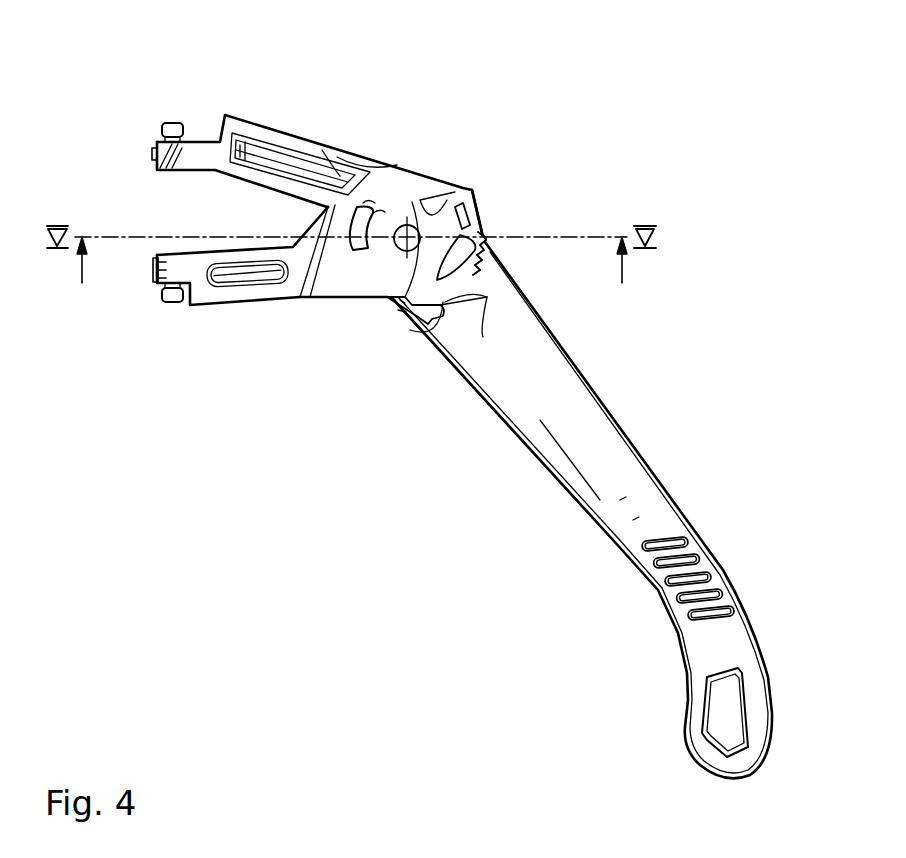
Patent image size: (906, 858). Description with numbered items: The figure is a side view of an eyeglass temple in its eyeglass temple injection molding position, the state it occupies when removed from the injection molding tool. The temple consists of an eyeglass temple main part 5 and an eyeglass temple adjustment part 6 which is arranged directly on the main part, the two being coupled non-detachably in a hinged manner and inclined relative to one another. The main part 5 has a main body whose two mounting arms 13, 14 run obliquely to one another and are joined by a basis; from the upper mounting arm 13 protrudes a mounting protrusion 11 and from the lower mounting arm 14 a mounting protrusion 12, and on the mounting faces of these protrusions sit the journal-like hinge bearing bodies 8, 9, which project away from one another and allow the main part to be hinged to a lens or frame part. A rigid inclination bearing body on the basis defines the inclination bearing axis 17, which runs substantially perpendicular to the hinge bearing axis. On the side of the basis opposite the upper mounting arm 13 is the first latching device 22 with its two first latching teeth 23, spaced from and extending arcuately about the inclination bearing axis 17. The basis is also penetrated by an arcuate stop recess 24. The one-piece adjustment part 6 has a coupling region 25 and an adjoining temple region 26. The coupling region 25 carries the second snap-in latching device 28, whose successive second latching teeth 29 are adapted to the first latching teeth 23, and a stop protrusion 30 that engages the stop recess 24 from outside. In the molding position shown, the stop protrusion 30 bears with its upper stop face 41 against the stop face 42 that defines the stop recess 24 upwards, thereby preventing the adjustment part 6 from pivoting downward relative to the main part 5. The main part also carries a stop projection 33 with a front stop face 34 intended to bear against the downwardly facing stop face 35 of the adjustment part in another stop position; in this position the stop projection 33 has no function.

The eyeglass temple main part 5 is at (292, 300).
The eyeglass temple adjustment part 6 is at (648, 463).
The hinge bearing body 8 is at (162, 131).
The hinge bearing body 9 is at (162, 300).
The mounting protrusion 11 is at (152, 158).
The mounting protrusion 12 is at (157, 282).
The mounting arm 13 is at (273, 137).
The mounting arm 14 is at (243, 295).
The inclination bearing axis 17 is at (420, 218).
The first latching device 22 is at (492, 214).
The first latching teeth 23 is at (484, 227).
The stop recess 24 is at (407, 222).
The coupling region 25 is at (395, 300).
The temple region 26 is at (590, 418).
The second snap-in latching device 28 is at (480, 267).
The second latching teeth 29 is at (482, 233).
The stop protrusion 30 is at (372, 203).
The stop projection 33 is at (403, 302).
The front stop face 34 is at (470, 282).
The stop face 35 is at (402, 312).
The upper stop face 41 is at (382, 205).
The stop face 42 is at (327, 205).